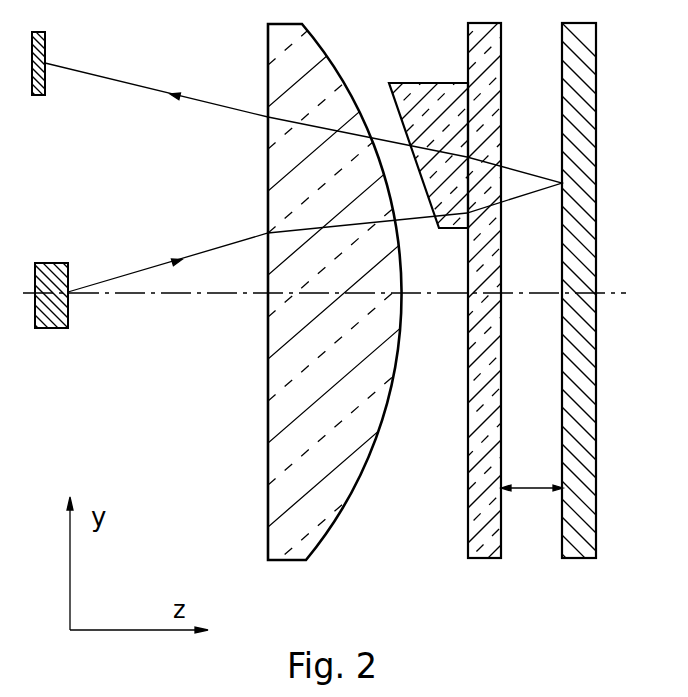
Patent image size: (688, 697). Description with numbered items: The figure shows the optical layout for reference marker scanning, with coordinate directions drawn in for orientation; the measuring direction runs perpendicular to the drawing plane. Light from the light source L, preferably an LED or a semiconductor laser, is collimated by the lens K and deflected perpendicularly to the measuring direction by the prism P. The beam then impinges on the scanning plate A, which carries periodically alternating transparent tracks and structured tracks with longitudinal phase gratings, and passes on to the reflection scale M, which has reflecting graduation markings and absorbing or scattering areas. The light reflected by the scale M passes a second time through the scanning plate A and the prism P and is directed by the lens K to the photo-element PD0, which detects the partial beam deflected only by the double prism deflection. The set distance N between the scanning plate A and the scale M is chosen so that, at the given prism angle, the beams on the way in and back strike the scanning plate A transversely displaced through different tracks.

The photo-element PD0 is at (45, 43).
The light source L is at (47, 328).
The lens K is at (268, 380).
The prism P is at (431, 84).
The scanning plate A is at (468, 480).
The reflection scale M is at (586, 468).
The set distance N is at (532, 474).